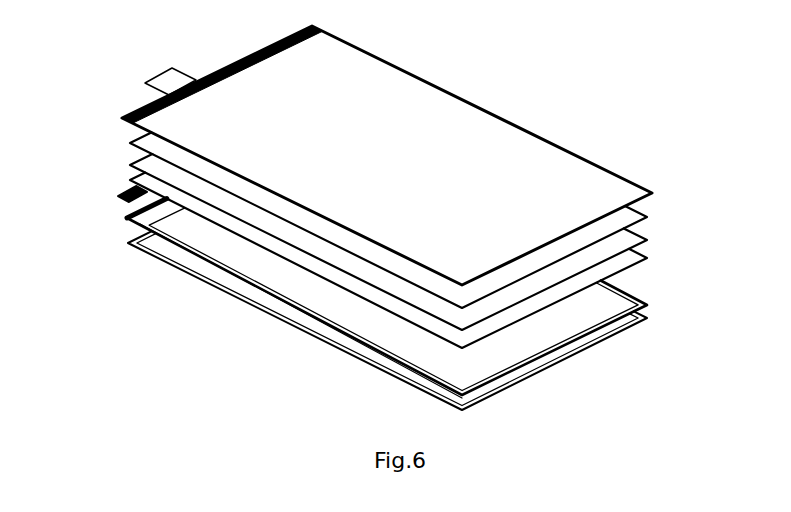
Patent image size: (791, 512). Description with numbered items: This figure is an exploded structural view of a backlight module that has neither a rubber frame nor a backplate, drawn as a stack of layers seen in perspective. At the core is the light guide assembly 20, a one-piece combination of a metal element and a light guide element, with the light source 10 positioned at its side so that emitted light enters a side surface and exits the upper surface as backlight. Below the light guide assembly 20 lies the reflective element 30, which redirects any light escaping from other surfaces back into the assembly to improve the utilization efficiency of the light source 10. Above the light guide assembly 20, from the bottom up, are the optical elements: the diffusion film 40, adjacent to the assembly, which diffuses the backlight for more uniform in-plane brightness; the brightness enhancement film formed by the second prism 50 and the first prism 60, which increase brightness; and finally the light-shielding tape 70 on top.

The light source 10 is at (127, 219).
The light guide assembly 20 is at (647, 305).
The reflective element 30 is at (647, 318).
The diffusion film 40 is at (647, 258).
The second prism 50 is at (647, 240).
The first prism 60 is at (647, 217).
The light-shielding tape 70 is at (652, 193).